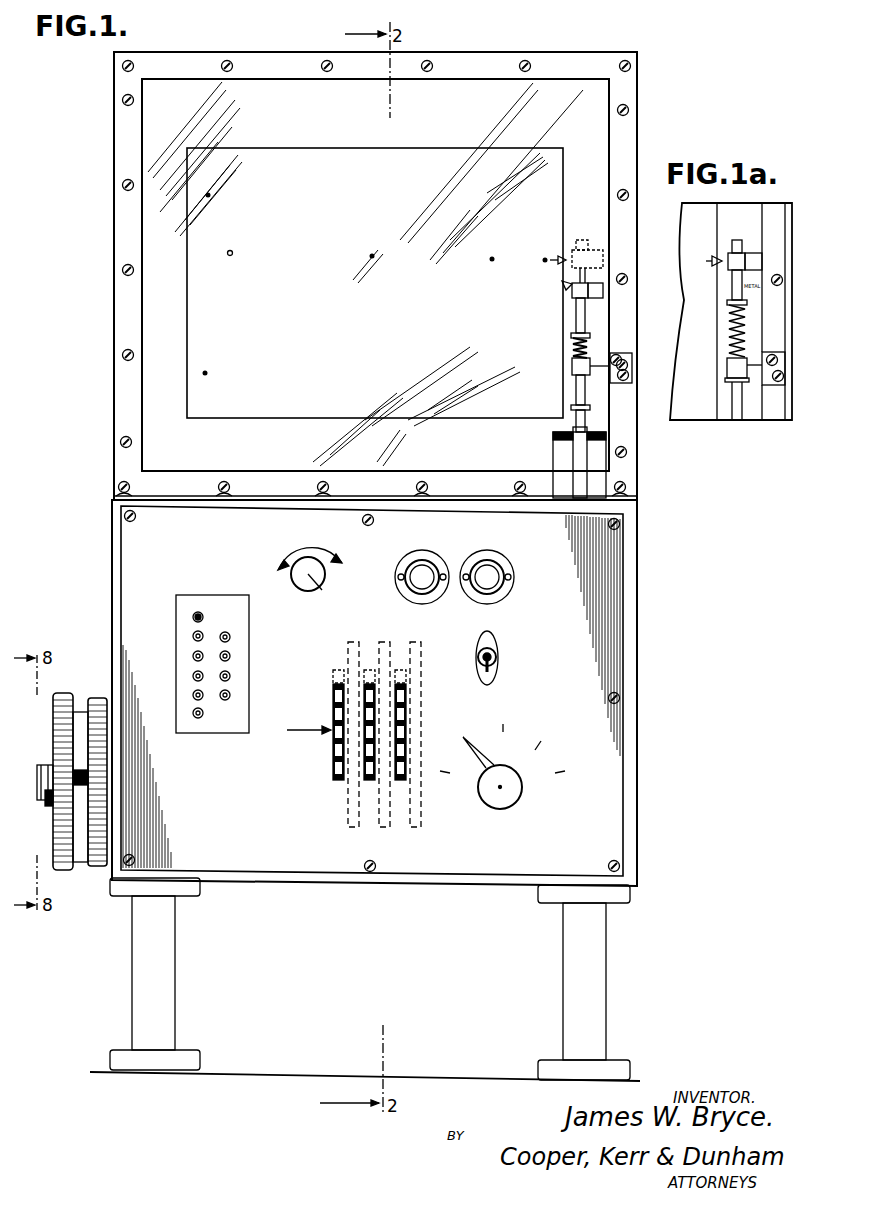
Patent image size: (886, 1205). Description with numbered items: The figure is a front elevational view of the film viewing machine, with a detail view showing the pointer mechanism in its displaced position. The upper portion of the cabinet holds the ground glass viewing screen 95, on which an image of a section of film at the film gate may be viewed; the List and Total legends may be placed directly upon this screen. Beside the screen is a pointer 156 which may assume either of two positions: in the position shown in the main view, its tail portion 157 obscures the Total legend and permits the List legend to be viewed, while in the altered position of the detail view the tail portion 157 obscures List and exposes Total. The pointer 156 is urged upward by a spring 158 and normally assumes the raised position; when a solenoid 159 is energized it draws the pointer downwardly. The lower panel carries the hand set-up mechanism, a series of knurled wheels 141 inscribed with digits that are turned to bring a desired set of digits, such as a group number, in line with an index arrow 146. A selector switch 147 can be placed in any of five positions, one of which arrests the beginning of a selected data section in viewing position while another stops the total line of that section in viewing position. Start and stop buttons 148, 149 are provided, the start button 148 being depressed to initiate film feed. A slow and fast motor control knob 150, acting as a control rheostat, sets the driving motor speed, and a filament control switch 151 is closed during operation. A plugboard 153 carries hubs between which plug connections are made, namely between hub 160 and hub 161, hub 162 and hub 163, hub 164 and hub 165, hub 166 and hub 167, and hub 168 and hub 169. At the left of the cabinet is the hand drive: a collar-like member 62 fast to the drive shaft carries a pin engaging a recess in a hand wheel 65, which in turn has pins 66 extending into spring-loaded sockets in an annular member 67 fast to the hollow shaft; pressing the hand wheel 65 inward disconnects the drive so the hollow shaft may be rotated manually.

In FIG. 1, the ground glass viewing screen 95 is at (365, 274).
In FIG. 1, the knurled wheels 141 is at (369, 776).
In FIG. 1, the index arrow 146 is at (300, 733).
In FIG. 1, the selector switch 147 is at (510, 793).
In FIG. 1, the start button 148 is at (425, 580).
In FIG. 1, the stop button 149 is at (490, 582).
In FIG. 1, the slow and fast motor control knob 150 is at (308, 582).
In FIG. 1, the filament control switch 151 is at (499, 658).
In FIG. 1, the plugboard 153 is at (208, 606).
In FIG. 1, the pointer 156 is at (565, 287).
In FIG. 1a, the pointer 156 is at (712, 259).
In FIG. 1, the tail portion 157 is at (603, 292).
In FIG. 1a, the tail portion 157 is at (750, 253).
In FIG. 1, the spring 158 is at (572, 347).
In FIG. 1a, the spring 158 is at (737, 330).
In FIG. 1, the solenoid 159 is at (593, 465).
In FIG. 1, the plugboard hub 160 is at (192, 617).
In FIG. 1, the plugboard hub 161 is at (192, 637).
In FIG. 1, the plugboard hub 162 is at (231, 637).
In FIG. 1, the plugboard hub 163 is at (231, 656).
In FIG. 1, the plugboard hub 164 is at (192, 656).
In FIG. 1, the plugboard hub 165 is at (192, 676).
In FIG. 1, the plugboard hub 166 is at (231, 675).
In FIG. 1, the plugboard hub 167 is at (231, 694).
In FIG. 1, the plugboard hub 168 is at (193, 698).
In FIG. 1, the plugboard hub 169 is at (196, 719).
In FIG. 1, the collar-like member 62 is at (50, 812).
In FIG. 1, the hand wheel 65 is at (62, 872).
In FIG. 1, the pins 66 is at (78, 862).
In FIG. 1, the annular member 67 is at (97, 700).